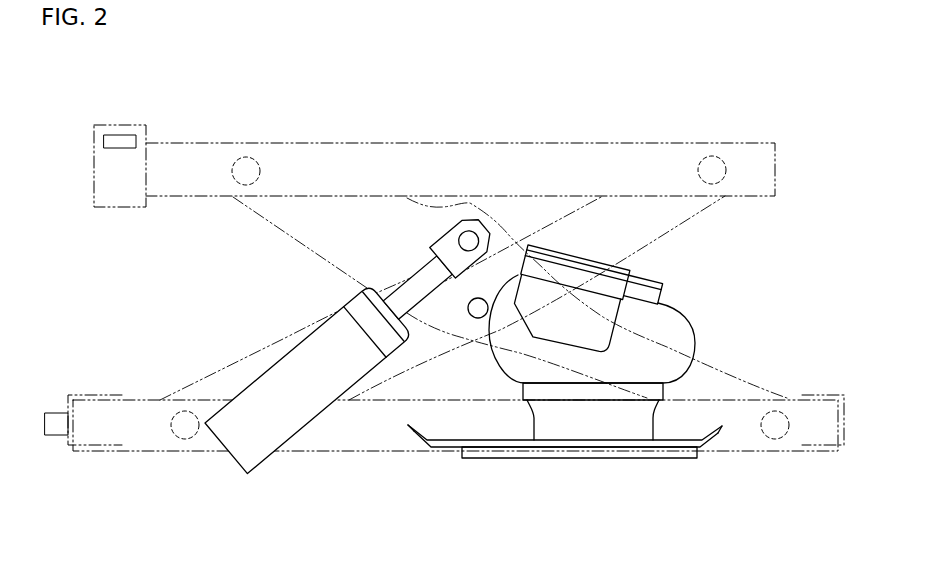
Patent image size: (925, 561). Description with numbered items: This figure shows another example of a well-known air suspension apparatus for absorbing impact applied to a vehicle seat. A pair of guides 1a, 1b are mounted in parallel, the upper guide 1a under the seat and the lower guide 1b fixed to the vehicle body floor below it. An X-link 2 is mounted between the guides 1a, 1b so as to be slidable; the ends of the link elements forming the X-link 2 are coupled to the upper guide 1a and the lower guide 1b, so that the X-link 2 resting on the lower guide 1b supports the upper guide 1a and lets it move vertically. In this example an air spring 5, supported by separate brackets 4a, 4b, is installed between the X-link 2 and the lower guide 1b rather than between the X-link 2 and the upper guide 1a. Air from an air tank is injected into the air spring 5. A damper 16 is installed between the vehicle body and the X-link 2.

The upper guide 1a is at (440, 142).
The lower guide 1b is at (330, 452).
The X-link 2 is at (267, 214).
The damper 16 is at (278, 355).
The bracket 4a is at (678, 303).
The bracket 4b is at (718, 440).
The air spring 5 is at (694, 340).